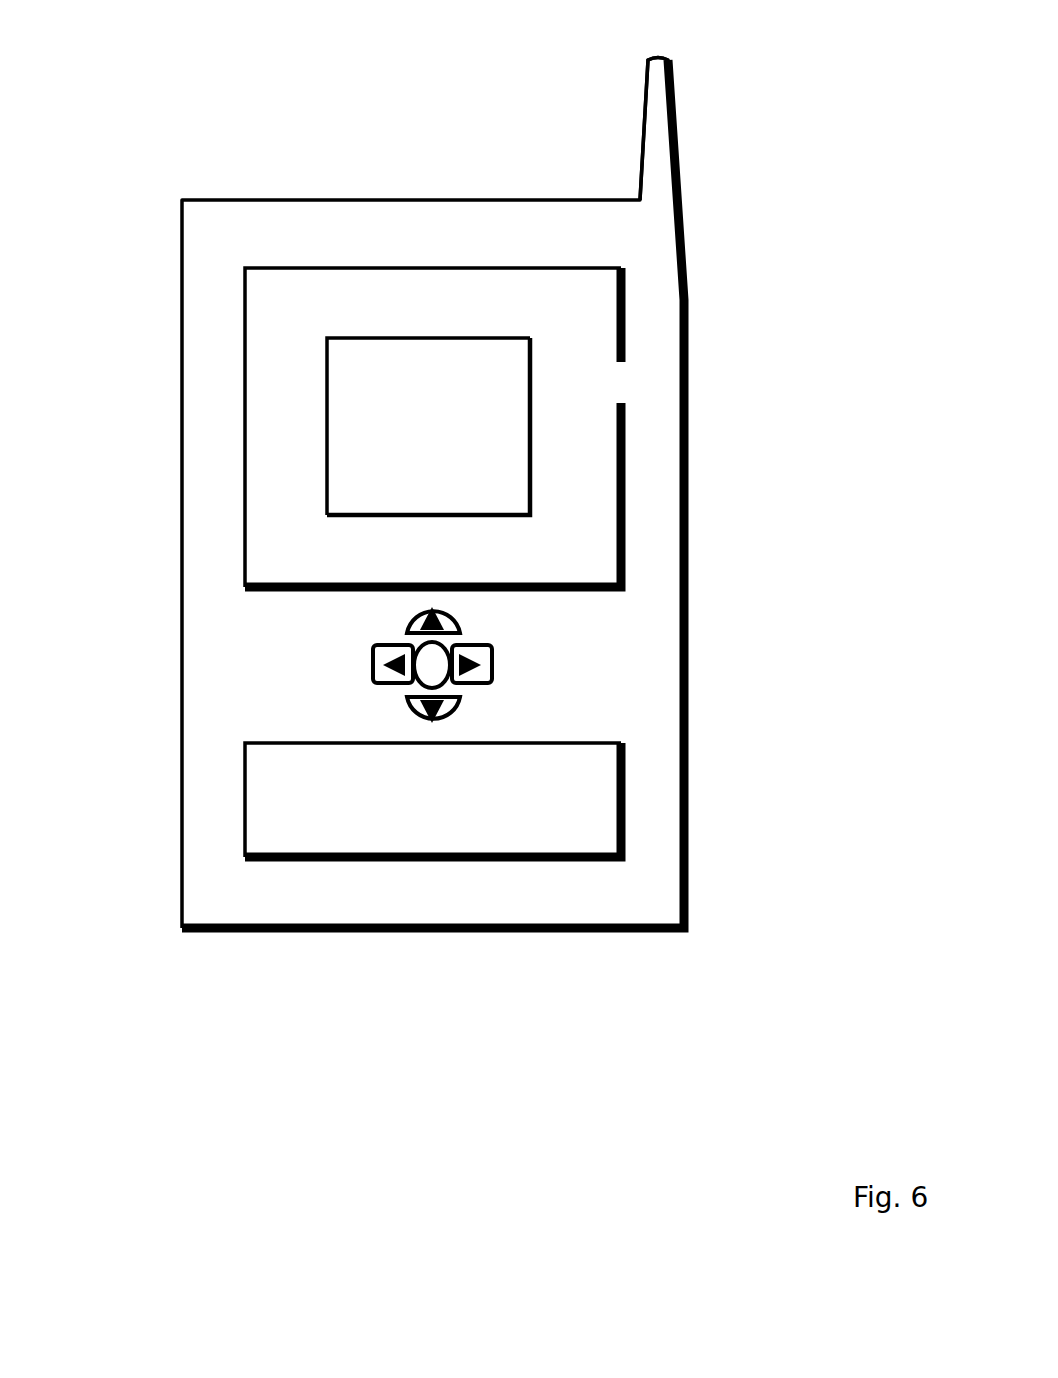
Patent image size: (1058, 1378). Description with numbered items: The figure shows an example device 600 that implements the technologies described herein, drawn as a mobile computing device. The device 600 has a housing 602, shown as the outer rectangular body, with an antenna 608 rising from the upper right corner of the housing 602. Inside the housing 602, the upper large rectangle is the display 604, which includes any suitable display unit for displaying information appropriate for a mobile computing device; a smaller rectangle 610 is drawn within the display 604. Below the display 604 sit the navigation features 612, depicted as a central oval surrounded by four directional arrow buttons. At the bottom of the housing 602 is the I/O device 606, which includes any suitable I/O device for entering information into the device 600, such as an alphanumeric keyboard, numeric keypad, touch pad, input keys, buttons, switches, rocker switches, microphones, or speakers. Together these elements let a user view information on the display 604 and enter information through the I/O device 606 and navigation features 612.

The device 600 is at (203, 88).
The housing 602 is at (692, 561).
The display 604 is at (627, 297).
The I/O device 606 is at (629, 790).
The antenna 608 is at (637, 120).
The display window 610 is at (540, 449).
The navigation features 612 is at (496, 663).